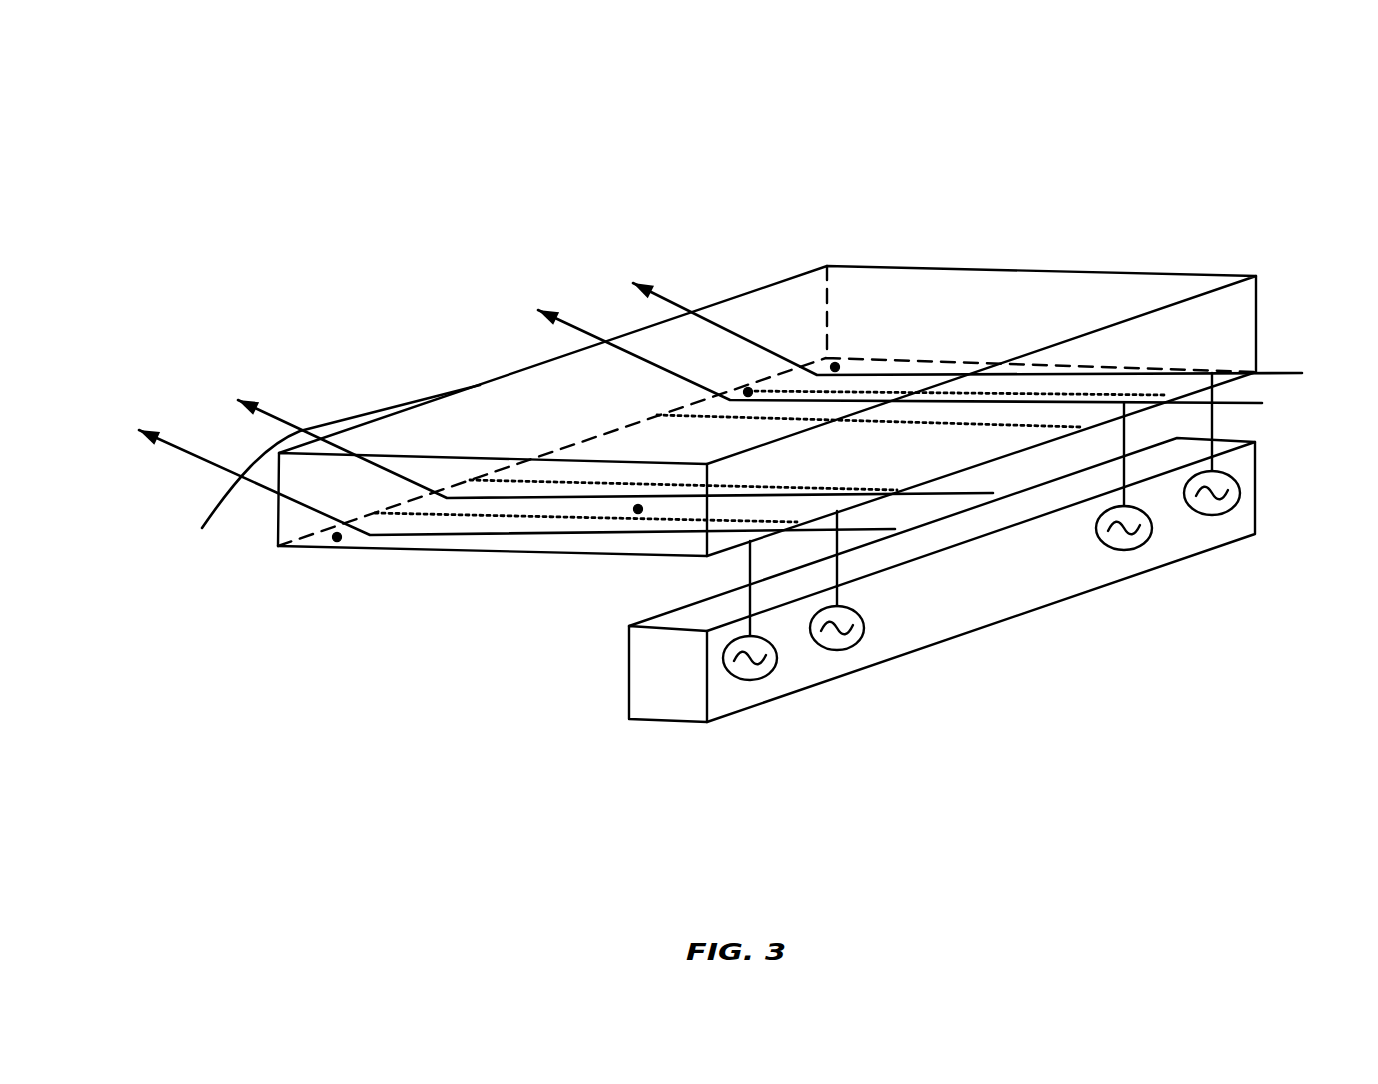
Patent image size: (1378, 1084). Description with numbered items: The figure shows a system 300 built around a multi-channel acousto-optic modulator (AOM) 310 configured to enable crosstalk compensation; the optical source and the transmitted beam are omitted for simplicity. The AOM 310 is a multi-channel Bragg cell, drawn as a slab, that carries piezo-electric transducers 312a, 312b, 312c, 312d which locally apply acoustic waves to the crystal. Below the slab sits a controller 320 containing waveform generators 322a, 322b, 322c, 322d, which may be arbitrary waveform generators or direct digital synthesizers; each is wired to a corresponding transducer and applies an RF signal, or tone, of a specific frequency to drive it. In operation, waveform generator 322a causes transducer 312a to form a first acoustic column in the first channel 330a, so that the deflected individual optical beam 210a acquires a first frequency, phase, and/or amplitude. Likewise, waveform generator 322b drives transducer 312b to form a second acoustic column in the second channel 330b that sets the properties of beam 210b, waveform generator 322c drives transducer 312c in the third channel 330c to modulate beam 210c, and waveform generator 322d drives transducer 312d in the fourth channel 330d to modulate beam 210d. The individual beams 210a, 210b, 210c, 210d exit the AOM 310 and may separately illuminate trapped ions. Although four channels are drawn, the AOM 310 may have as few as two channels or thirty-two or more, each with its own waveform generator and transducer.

The system 300 is at (170, 93).
The multi-channel acousto-optic modulator (AOM) 310 is at (1100, 270).
The piezo-electric transducer 312a is at (337, 538).
The piezo-electric transducer 312b is at (638, 510).
The piezo-electric transducer 312c is at (748, 391).
The piezo-electric transducer 312d is at (835, 367).
The individual optical beam 210a is at (150, 440).
The individual optical beam 210b is at (581, 473).
The individual optical beam 210c is at (687, 380).
The individual optical beam 210d is at (688, 310).
The first channel 330a is at (237, 441).
The second channel 330b is at (337, 408).
The third channel 330c is at (1222, 425).
The fourth channel 330d is at (1270, 383).
The controller 320 is at (952, 636).
The waveform generator 322a is at (750, 680).
The waveform generator 322b is at (837, 650).
The waveform generator 322c is at (1123, 550).
The waveform generator 322d is at (1212, 515).